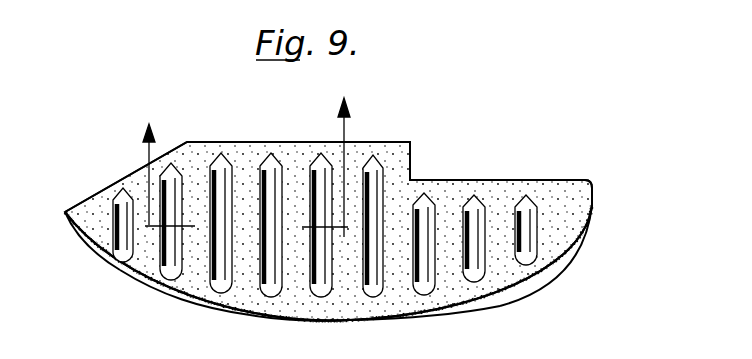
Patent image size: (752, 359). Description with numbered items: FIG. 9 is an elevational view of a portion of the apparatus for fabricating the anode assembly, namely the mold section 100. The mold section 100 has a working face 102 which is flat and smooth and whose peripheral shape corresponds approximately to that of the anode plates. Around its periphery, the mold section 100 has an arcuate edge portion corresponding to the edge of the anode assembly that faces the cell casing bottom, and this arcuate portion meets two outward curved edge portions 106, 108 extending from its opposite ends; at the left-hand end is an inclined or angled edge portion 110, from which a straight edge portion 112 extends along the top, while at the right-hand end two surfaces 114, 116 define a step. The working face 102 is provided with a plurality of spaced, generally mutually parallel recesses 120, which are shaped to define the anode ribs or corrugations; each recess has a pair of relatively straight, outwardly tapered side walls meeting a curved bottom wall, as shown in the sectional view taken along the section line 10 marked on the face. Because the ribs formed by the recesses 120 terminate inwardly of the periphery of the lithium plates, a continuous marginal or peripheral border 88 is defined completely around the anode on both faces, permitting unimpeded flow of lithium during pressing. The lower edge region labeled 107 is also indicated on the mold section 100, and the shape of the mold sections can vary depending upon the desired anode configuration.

The mold section 100 is at (520, 140).
The section line 10- 10 is at (250, 153).
The peripheral border 88 is at (462, 304).
The working face 102 is at (242, 311).
The outward curved edge portion 106 is at (83, 248).
The bottom edge 107 is at (345, 322).
The outward curved edge portion 108 is at (560, 260).
The inclined edge portion 110 is at (118, 178).
The straight edge portion 112 is at (300, 142).
The step surface 114 is at (410, 160).
The step surface 116 is at (560, 180).
The recesses 120 is at (182, 180).